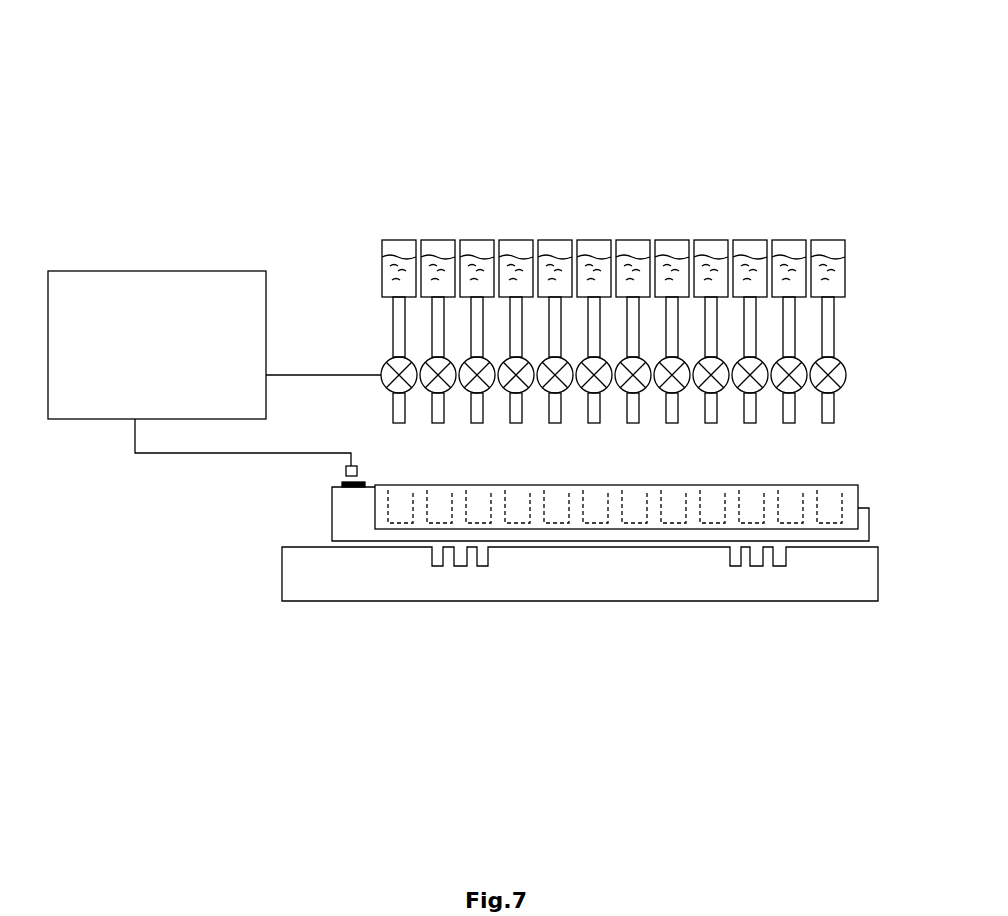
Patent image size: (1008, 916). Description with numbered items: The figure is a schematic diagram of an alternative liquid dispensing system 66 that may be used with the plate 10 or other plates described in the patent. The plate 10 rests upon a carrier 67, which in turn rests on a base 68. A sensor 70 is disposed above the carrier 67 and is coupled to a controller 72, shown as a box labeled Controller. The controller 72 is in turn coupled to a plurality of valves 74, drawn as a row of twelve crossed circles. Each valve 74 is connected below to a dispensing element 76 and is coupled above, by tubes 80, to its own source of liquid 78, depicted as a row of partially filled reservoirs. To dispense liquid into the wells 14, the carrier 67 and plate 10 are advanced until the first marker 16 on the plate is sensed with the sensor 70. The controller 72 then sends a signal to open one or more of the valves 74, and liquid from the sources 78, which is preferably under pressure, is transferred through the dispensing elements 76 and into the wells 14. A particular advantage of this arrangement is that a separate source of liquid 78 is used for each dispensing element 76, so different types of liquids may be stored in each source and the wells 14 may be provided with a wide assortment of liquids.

The liquid dispensing system 66 is at (376, 78).
The controller 72 is at (182, 270).
The source of liquid 78 is at (380, 240).
The tubes 80 is at (393, 327).
The valves 74 is at (387, 367).
The dispensing element 76 is at (393, 407).
The sensor 70 is at (335, 471).
The first marker 16 is at (365, 483).
The carrier 67 is at (340, 517).
The plate 10 is at (852, 480).
The wells 14 is at (478, 485).
The base 68 is at (293, 592).